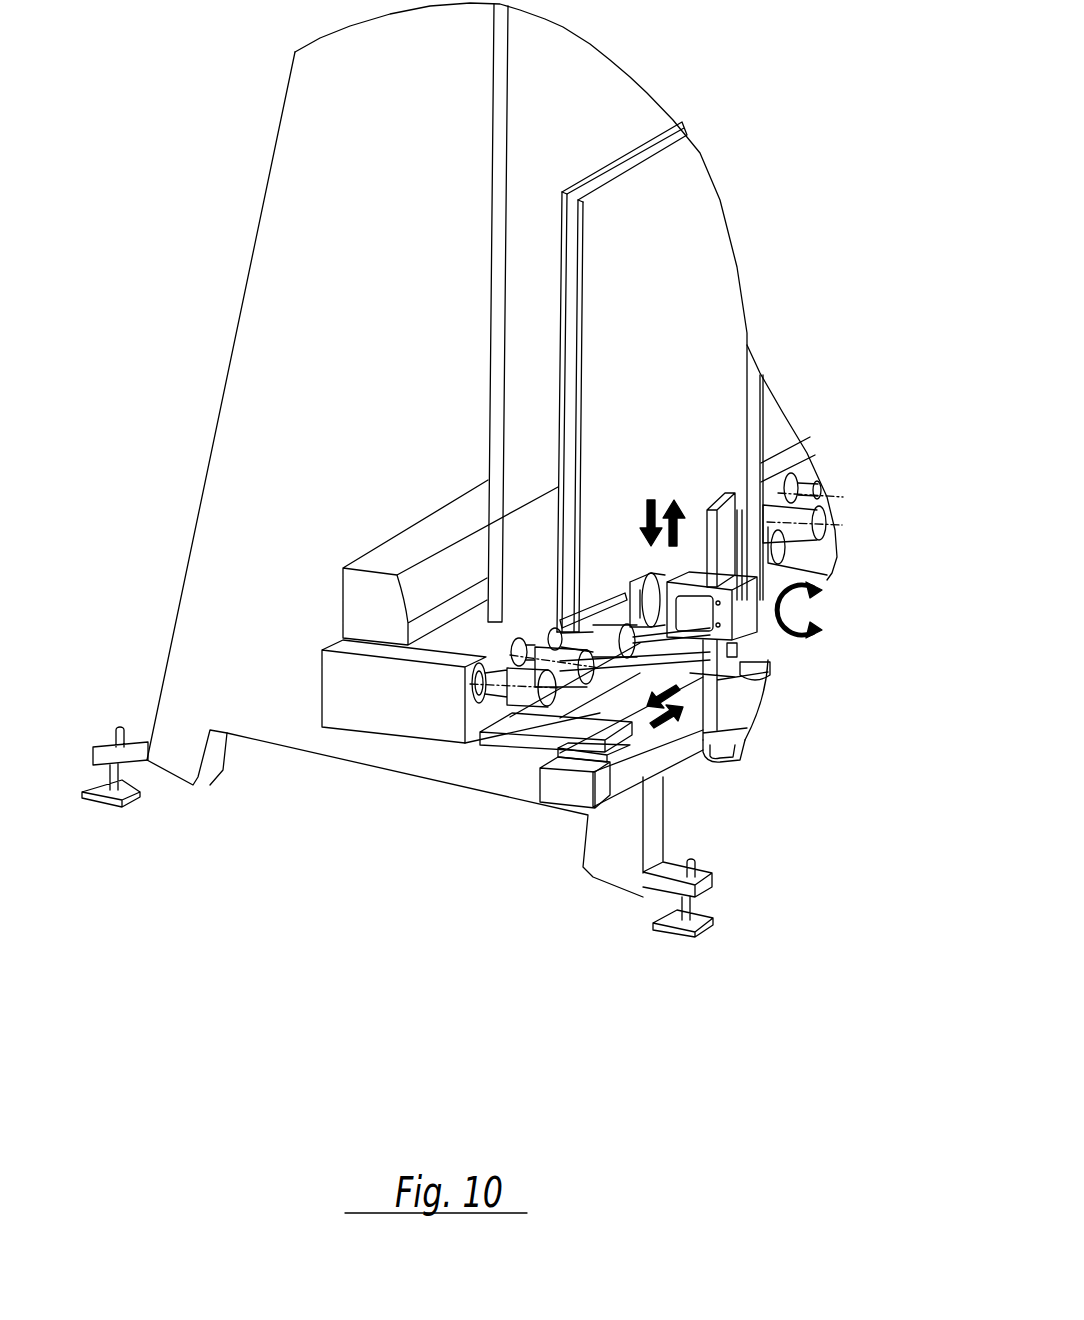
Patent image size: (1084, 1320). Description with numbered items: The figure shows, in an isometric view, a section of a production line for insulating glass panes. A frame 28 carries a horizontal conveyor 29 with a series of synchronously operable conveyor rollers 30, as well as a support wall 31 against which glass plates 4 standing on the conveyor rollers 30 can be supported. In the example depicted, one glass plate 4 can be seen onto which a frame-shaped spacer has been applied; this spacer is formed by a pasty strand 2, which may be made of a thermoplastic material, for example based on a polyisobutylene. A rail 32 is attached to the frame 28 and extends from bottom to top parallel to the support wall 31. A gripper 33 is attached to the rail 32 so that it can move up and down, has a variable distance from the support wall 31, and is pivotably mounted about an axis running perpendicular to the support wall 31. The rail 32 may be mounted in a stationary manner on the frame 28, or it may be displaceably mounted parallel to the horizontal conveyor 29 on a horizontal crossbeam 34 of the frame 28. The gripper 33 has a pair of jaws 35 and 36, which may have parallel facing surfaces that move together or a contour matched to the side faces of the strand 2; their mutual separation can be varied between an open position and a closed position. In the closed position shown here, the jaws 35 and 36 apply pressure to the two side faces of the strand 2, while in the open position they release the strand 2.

The pasty strand 2 is at (577, 402).
The glass plate 4 is at (677, 318).
The frame 28 is at (193, 757).
The horizontal conveyor 29 is at (448, 715).
The conveyor rollers 30 is at (527, 693).
The support wall 31 is at (513, 217).
The rail 32 is at (745, 498).
The gripper 33 is at (620, 573).
The horizontal crossbeam 34 is at (660, 745).
The jaw 35 is at (605, 608).
The jaw 36 is at (628, 625).